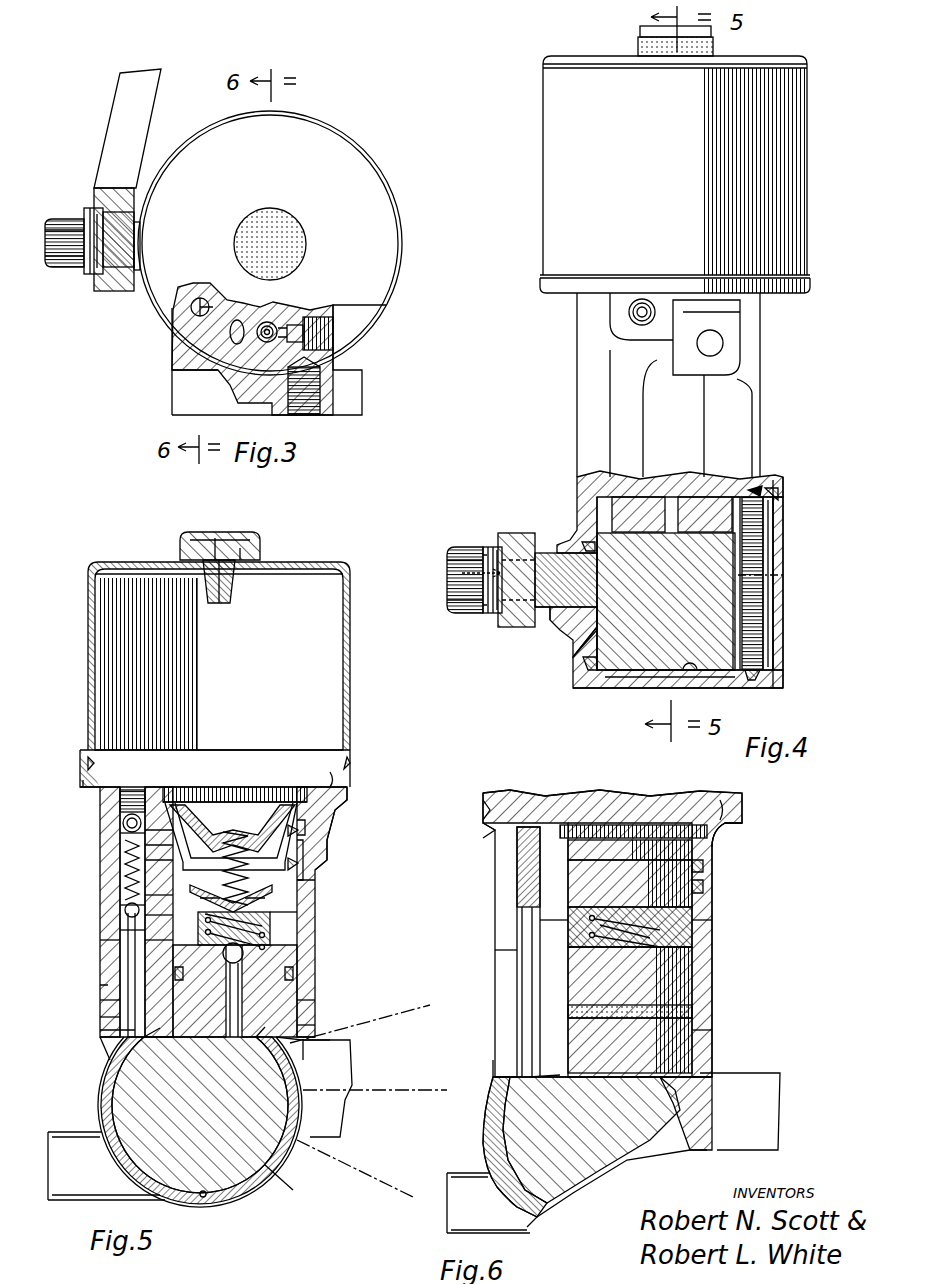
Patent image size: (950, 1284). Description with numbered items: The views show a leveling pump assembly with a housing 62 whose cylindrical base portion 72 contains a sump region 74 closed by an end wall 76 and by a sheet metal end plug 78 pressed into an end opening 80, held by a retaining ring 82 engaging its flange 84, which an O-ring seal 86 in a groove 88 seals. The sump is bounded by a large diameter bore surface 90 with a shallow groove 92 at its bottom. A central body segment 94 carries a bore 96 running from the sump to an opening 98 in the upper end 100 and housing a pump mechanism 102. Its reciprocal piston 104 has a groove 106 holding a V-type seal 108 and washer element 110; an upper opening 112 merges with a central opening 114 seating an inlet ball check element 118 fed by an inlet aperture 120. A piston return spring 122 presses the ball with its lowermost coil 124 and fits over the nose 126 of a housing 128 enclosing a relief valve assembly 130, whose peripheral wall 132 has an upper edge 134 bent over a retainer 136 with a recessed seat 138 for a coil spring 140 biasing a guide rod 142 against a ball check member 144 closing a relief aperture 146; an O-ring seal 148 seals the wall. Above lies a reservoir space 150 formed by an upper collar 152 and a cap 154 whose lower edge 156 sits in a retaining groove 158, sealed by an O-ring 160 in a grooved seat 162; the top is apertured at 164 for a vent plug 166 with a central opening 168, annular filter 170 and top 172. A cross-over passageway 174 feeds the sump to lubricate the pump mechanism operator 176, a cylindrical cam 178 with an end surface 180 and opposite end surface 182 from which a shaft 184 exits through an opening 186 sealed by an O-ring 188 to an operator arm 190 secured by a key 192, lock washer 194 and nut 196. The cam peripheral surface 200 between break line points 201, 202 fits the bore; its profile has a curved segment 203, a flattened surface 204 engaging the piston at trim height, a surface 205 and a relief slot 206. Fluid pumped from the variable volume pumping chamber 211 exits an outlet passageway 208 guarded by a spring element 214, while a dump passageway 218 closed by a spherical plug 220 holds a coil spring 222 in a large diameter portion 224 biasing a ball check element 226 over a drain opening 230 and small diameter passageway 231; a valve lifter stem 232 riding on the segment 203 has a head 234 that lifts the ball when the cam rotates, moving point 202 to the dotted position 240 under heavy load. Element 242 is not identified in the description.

In FIG. 4, the housing 62 is at (568, 428).
In FIG. 5, the housing 62 is at (92, 969).
In FIG. 6, the housing 62 is at (720, 986).
In FIG. 4, the base portion 72 is at (607, 680).
In FIG. 4, the sump region 74 is at (601, 504).
In FIG. 6, the sump region 74 is at (522, 1081).
In FIG. 4, the base portion end wall 76 is at (587, 662).
In FIG. 4, the end plug 78 is at (743, 573).
In FIG. 4, the end opening 80 is at (783, 660).
In FIG. 4, the snap spring retaining ring 82 is at (770, 620).
In FIG. 4, the flange 84 is at (783, 485).
In FIG. 4, the O-ring seal 86 is at (753, 673).
In FIG. 4, the groove 88 is at (752, 492).
In FIG. 5, the large diameter bore surface 90 is at (122, 1135).
In FIG. 6, the large diameter bore surface 90 is at (540, 1195).
In FIG. 4, the shallow groove 92 is at (690, 660).
In FIG. 5, the shallow groove 92 is at (203, 1198).
In FIG. 5, the central body segment 94 is at (310, 885).
In FIG. 6, the central body segment 94 is at (495, 953).
In FIG. 5, the bore 96 is at (297, 935).
In FIG. 6, the bore 96 is at (690, 933).
In FIG. 5, the opening 98 is at (307, 827).
In FIG. 6, the opening 98 is at (703, 867).
In FIG. 5, the upper end 100 is at (173, 790).
In FIG. 6, the upper end 100 is at (495, 848).
In FIG. 5, the pump mechanism 102 is at (297, 1005).
In FIG. 6, the pump mechanism 102 is at (677, 993).
In FIG. 5, the reciprocal piston 104 is at (300, 1030).
In FIG. 6, the reciprocal piston 104 is at (680, 1042).
In FIG. 5, the groove 106 is at (297, 970).
In FIG. 5, the annular block V-type seal 108 is at (175, 975).
In FIG. 6, the annular block V-type seal 108 is at (603, 1010).
In FIG. 5, the washer element 110 is at (297, 990).
In FIG. 6, the washer element 110 is at (605, 1023).
In FIG. 5, the cylindrically shaped opening 112 is at (270, 928).
In FIG. 5, the central opening 114 is at (244, 953).
In FIG. 5, the inlet ball check element 118 is at (283, 972).
In FIG. 5, the inlet aperture 120 is at (240, 997).
In FIG. 5, the piston return spring 122 is at (270, 940).
In FIG. 6, the piston return spring 122 is at (615, 935).
In FIG. 5, the lowermost coil 124 is at (175, 945).
In FIG. 5, the nose 126 is at (175, 918).
In FIG. 6, the nose 126 is at (673, 940).
In FIG. 5, the housing 128 is at (168, 897).
In FIG. 6, the housing 128 is at (567, 923).
In FIG. 5, the relief valve assembly 130 is at (305, 848).
In FIG. 5, the peripheral wall 132 is at (278, 787).
In FIG. 6, the peripheral wall 132 is at (633, 870).
In FIG. 5, the upper edge 134 is at (272, 805).
In FIG. 5, the retainer 136 is at (190, 790).
In FIG. 5, the recessed seat 138 is at (212, 830).
In FIG. 5, the coil spring 140 is at (246, 828).
In FIG. 5, the guide rod 142 is at (255, 890).
In FIG. 5, the ball check member 144 is at (258, 903).
In FIG. 5, the relief aperture 146 is at (185, 970).
In FIG. 5, the O-ring seal 148 is at (300, 805).
In FIG. 6, the O-ring seal 148 is at (703, 888).
In FIG. 5, the reservoir space 150 is at (325, 645).
In FIG. 5, the upper collar 152 is at (340, 778).
In FIG. 6, the upper collar 152 is at (717, 803).
In FIG. 3, the cap 154 is at (399, 217).
In FIG. 4, the cap 154 is at (792, 208).
In FIG. 5, the cap 154 is at (345, 570).
In FIG. 5, the lower edge 156 is at (347, 800).
In FIG. 6, the lower edge 156 is at (742, 823).
In FIG. 5, the retaining groove 158 is at (80, 783).
In FIG. 6, the retaining groove 158 is at (490, 818).
In FIG. 5, the O-ring 160 is at (352, 760).
In FIG. 5, the grooved seat 162 is at (85, 775).
In FIG. 5, the aperture 164 is at (262, 558).
In FIG. 5, the resilient vent plug 166 is at (237, 590).
In FIG. 5, the elongated central opening 168 is at (215, 532).
In FIG. 4, the annular filter 170 is at (638, 44).
In FIG. 5, the annular filter 170 is at (258, 548).
In FIG. 3, the top 172 is at (285, 239).
In FIG. 4, the top 172 is at (633, 28).
In FIG. 5, the top 172 is at (240, 535).
In FIG. 3, the cross-over passageway 174 is at (193, 315).
In FIG. 6, the cross-over passageway 174 is at (517, 977).
In FIG. 3, the pump mechanism operator 176 is at (132, 265).
In FIG. 4, the pump mechanism operator 176 is at (561, 607).
In FIG. 4, the cam 178 is at (663, 650).
In FIG. 5, the cam 178 is at (130, 1093).
In FIG. 6, the cam 178 is at (523, 1130).
In FIG. 4, the end surface 180 is at (747, 595).
In FIG. 4, the opposite end surface 182 is at (607, 677).
In FIG. 3, the shaft 184 is at (125, 246).
In FIG. 4, the shaft 184 is at (543, 593).
In FIG. 4, the opening 186 is at (560, 553).
In FIG. 4, the O-ring 188 is at (577, 647).
In FIG. 3, the operator arm 190 is at (159, 95).
In FIG. 4, the operator arm 190 is at (510, 533).
In FIG. 5, the operator arm 190 is at (340, 1078).
In FIG. 6, the operator arm 190 is at (763, 1100).
In FIG. 3, the key 192 is at (113, 188).
In FIG. 4, the key 192 is at (500, 540).
In FIG. 3, the lock washer 194 is at (82, 224).
In FIG. 4, the lock washer 194 is at (493, 620).
In FIG. 3, the nut 196 is at (67, 260).
In FIG. 4, the nut 196 is at (470, 567).
In FIG. 5, the peripheral surface 200 is at (272, 1183).
In FIG. 5, the break line point 201 is at (120, 1050).
In FIG. 5, the break line point 202 is at (292, 1042).
In FIG. 5, the first continuously curved segment 203 is at (128, 1030).
In FIG. 5, the flattened curved surface 204 is at (175, 1040).
In FIG. 6, the flattened curved surface 204 is at (600, 1075).
In FIG. 5, the surface 205 is at (232, 1190).
In FIG. 5, the fluid flow relief slot 206 is at (235, 1040).
In FIG. 3, the outlet passageway 208 is at (303, 316).
In FIG. 5, the variable volume pumping chamber 211 is at (128, 918).
In FIG. 6, the variable volume pumping chamber 211 is at (583, 947).
In FIG. 3, the spring element 214 is at (225, 372).
In FIG. 5, the fluid dump passageway 218 is at (118, 858).
In FIG. 5, the spherical plug 220 is at (123, 825).
In FIG. 5, the coil spring 222 is at (120, 838).
In FIG. 5, the large diameter portion 224 is at (123, 870).
In FIG. 5, the ball check element 226 is at (125, 912).
In FIG. 5, the drain opening 230 is at (125, 940).
In FIG. 5, the small diameter passageway portion 231 is at (100, 1015).
In FIG. 5, the valve lifter stem 232 is at (100, 998).
In FIG. 5, the head 234 is at (100, 938).
In FIG. 5, the dotted line position 240 is at (330, 1050).
In FIG. 5, the passage 242 is at (168, 852).